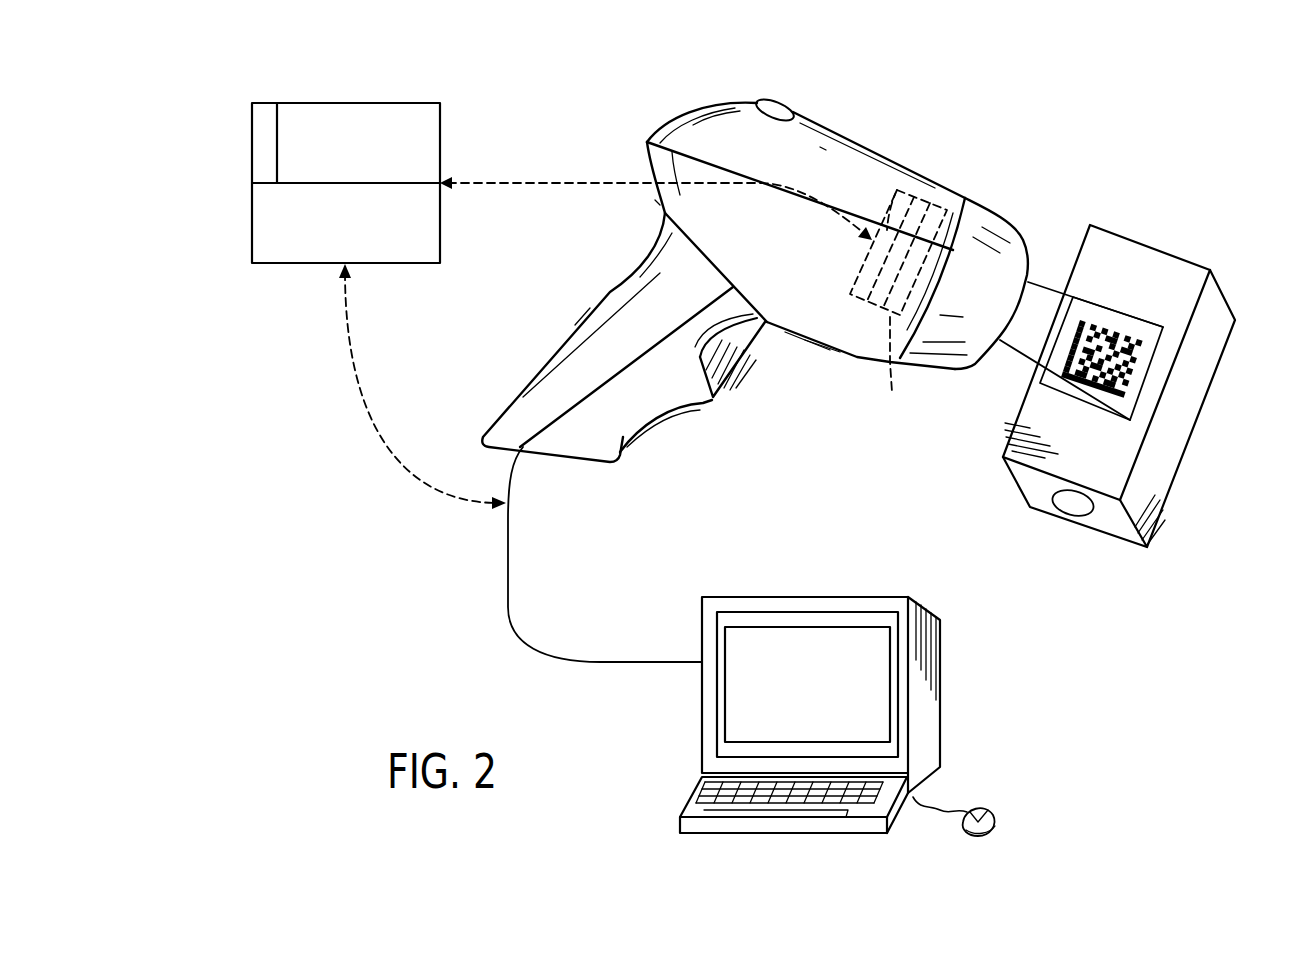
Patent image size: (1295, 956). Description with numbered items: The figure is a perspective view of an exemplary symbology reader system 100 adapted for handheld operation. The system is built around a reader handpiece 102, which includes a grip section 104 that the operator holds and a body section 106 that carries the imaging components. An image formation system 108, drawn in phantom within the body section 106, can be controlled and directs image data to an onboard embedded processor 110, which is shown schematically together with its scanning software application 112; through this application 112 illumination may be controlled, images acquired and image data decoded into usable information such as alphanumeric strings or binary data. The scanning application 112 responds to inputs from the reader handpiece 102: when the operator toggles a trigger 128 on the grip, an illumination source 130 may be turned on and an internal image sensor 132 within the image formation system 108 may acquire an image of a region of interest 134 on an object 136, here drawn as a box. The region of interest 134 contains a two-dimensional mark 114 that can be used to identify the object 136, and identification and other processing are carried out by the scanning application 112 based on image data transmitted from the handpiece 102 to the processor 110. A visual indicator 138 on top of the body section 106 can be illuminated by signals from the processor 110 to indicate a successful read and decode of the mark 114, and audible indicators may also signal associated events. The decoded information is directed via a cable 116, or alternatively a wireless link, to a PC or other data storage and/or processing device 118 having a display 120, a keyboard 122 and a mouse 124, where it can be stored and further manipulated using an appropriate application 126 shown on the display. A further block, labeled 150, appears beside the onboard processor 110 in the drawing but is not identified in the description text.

The symbology reader system 100 is at (1096, 108).
The reader handpiece 102 is at (823, 167).
The grip section 104 is at (660, 390).
The body section 106 is at (820, 303).
The image formation system 108 is at (896, 369).
The onboard embedded processor 110 is at (348, 103).
The scanning software application 112 is at (431, 218).
The two-dimensional mark 114 is at (1143, 360).
The cable 116 is at (510, 572).
The PC or other data storage and/or processing device 118 is at (936, 741).
The display 120 is at (853, 612).
The keyboard 122 is at (893, 822).
The mouse 124 is at (996, 812).
The application 126 is at (807, 627).
The trigger 128 is at (743, 363).
The illumination source 130 is at (925, 190).
The internal image sensor 132 is at (887, 180).
The region of interest 134 is at (1150, 320).
The object 136 is at (1180, 430).
The visual indicator 138 is at (784, 100).
The memory 150 is at (263, 143).